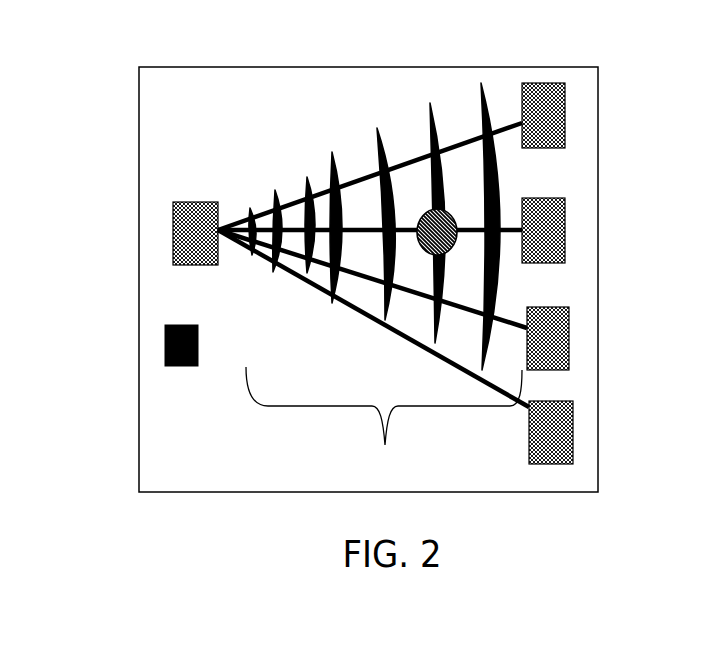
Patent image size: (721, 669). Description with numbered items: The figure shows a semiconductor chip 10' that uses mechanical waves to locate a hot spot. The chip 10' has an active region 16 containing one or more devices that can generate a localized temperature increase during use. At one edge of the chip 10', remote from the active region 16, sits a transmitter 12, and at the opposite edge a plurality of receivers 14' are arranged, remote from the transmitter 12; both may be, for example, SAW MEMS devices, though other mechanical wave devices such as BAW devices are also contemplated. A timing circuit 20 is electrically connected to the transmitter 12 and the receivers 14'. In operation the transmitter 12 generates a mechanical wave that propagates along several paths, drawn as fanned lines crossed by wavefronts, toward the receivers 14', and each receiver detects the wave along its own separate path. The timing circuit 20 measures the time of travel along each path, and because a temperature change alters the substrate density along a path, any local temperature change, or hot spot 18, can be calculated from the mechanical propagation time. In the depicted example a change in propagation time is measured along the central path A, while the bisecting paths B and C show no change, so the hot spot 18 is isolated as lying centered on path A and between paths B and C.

The chip 10' is at (328, 267).
The transmitter 12 is at (185, 245).
The plurality of receivers 14' is at (583, 273).
The active region 16 is at (384, 282).
The hot spot 18 is at (426, 221).
The timing circuit 20 is at (163, 358).
The path A is at (478, 237).
The path B is at (415, 155).
The path C is at (403, 298).